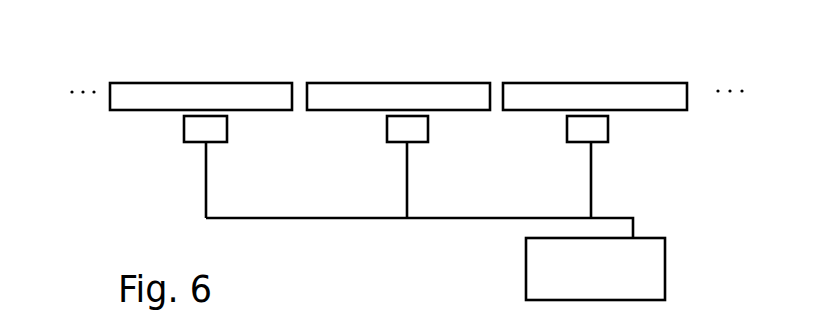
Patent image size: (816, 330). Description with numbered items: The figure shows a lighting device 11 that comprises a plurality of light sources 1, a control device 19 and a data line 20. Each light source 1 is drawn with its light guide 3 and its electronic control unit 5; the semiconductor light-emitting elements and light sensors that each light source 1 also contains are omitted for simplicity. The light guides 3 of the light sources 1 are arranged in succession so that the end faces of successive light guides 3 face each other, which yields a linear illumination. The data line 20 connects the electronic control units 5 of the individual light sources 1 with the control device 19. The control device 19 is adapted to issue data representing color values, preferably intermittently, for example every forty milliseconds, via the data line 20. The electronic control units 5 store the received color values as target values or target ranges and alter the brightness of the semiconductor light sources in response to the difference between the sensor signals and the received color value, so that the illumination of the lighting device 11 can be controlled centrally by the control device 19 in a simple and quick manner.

The light source 1 is at (397, 69).
The light guide 3 is at (152, 82).
The electronic control unit 5 is at (193, 143).
The lighting device 11 is at (110, 220).
The control device 19 is at (645, 238).
The data line 20 is at (598, 217).